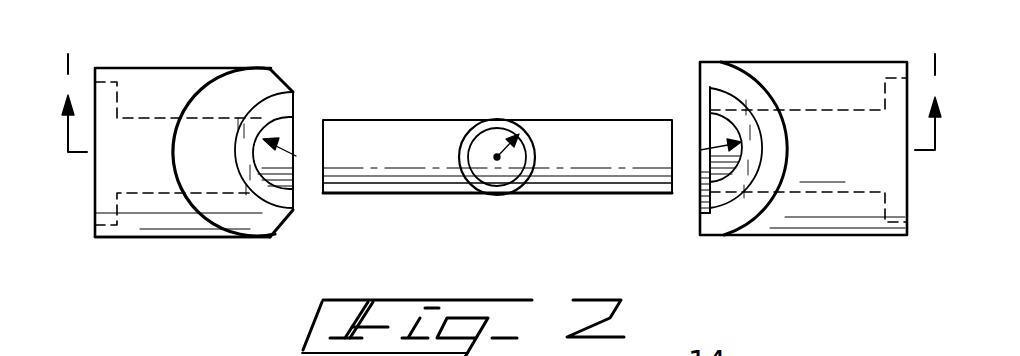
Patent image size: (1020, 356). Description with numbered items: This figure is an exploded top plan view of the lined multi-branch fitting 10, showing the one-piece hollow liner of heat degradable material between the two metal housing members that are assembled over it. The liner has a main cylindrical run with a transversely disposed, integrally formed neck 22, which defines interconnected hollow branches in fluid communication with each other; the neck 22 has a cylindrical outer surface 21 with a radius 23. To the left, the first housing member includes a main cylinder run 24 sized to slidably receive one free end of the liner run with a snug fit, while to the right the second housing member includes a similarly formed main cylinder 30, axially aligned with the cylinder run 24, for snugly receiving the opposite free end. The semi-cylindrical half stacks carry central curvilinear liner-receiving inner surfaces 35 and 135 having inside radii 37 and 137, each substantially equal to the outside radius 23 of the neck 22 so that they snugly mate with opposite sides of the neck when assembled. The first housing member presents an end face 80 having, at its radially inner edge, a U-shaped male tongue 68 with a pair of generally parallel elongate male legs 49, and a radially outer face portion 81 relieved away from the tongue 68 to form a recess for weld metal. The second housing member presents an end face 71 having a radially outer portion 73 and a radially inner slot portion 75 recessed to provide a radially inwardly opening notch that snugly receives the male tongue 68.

The lined multi-branch fitting 10 is at (796, 44).
The cylindrical outer surface 21 is at (460, 137).
The neck 22 is at (483, 119).
The radius 23 is at (503, 140).
The main cylinder run 24 is at (172, 76).
The main cylinder 30 is at (848, 72).
The inner surface 35 is at (295, 122).
The inside radius 37 is at (296, 156).
The male legs 49 is at (292, 205).
The male tongue 68 is at (294, 110).
The end face 71 is at (287, 222).
The radially outer portion 73 is at (700, 66).
The radially inner slot portion 75 is at (710, 194).
The end face 80 is at (497, 210).
The radially outer face portion 81 is at (284, 74).
The inner surface 135 is at (718, 128).
The inside radius 137 is at (700, 150).